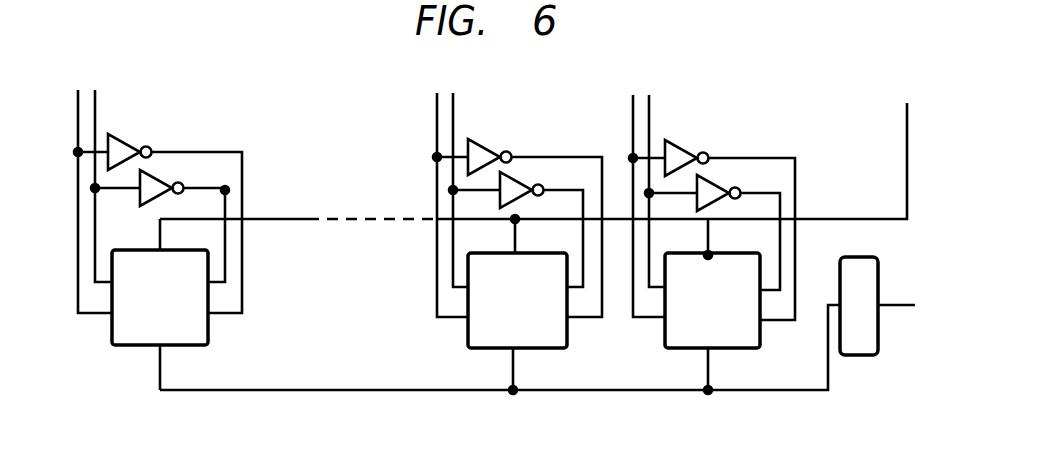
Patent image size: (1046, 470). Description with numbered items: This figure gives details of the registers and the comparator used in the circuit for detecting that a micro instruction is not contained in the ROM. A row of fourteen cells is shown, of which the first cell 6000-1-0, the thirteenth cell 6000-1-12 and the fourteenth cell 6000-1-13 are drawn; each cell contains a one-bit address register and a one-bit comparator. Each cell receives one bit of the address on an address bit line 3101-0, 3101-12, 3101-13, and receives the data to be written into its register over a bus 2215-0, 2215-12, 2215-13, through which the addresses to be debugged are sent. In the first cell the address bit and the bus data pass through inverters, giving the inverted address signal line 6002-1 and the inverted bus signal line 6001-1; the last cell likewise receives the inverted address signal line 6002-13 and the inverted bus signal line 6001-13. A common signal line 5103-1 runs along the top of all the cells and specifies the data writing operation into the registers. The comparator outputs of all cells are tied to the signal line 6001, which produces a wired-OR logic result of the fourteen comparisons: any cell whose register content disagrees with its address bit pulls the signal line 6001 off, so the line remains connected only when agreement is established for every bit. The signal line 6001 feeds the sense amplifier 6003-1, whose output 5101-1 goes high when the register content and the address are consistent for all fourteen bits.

The address bit line 3101-0 is at (78, 100).
The bus 2215-0 is at (96, 112).
The inverted address signal line 6002-1 is at (243, 160).
The inverted bus signal line 6001-1 is at (243, 197).
The cell 6000-1-0 is at (209, 328).
The signal line 6001 is at (212, 390).
The signal line for data writing 5103-1 is at (907, 104).
The address bit line 3101-12 is at (437, 108).
The bus 2215-12 is at (455, 104).
The cell 6000-1-12 is at (466, 338).
The address bit line 3101-13 is at (633, 127).
The bus 2215-13 is at (651, 104).
The inverted address signal line 6002-13 is at (740, 157).
The inverted bus signal line 6001-13 is at (781, 204).
The cell 6000-1-13 is at (690, 350).
The sense amplifier 6003-1 is at (850, 357).
The sense amplifier output 5101-1 is at (897, 306).